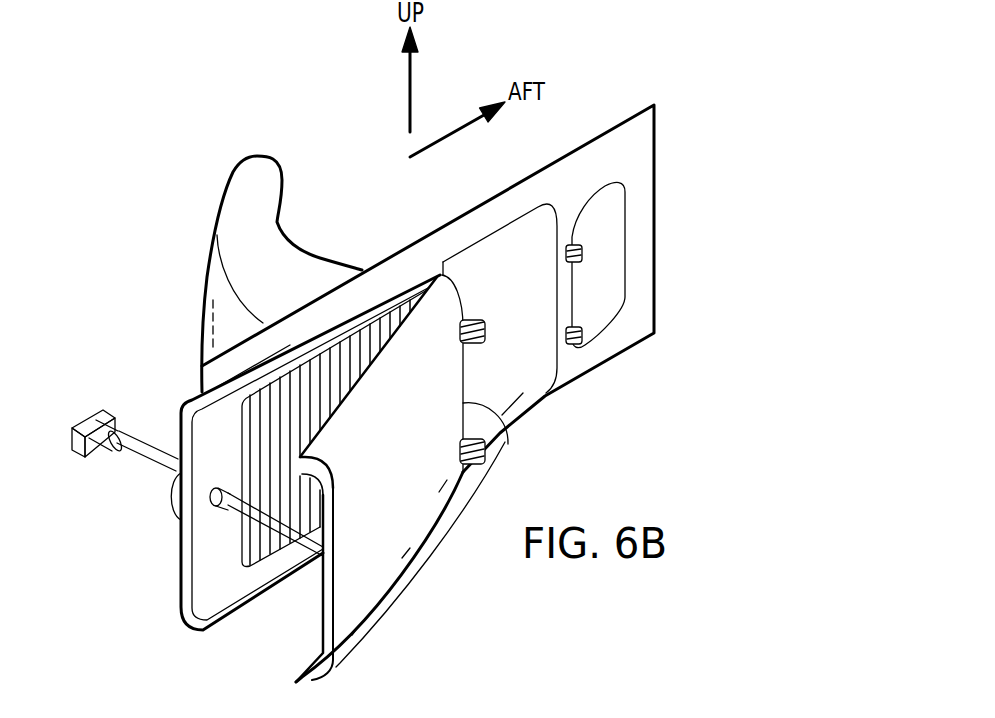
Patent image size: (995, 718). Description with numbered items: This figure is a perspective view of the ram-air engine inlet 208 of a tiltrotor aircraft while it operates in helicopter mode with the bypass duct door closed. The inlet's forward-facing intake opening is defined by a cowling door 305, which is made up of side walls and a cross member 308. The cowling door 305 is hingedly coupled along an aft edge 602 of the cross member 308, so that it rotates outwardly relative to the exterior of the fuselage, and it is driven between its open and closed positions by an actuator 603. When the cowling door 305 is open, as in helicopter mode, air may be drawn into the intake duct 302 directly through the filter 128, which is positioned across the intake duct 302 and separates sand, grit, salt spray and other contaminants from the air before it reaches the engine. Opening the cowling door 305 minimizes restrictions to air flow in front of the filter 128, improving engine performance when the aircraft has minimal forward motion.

The filter 128 is at (295, 504).
The ram-air engine inlet 208 is at (482, 218).
The intake duct 302 is at (295, 270).
The cowling door 305 is at (392, 567).
The cross member 308 is at (323, 617).
The aft edge 602 is at (508, 444).
The actuator 603 is at (140, 463).